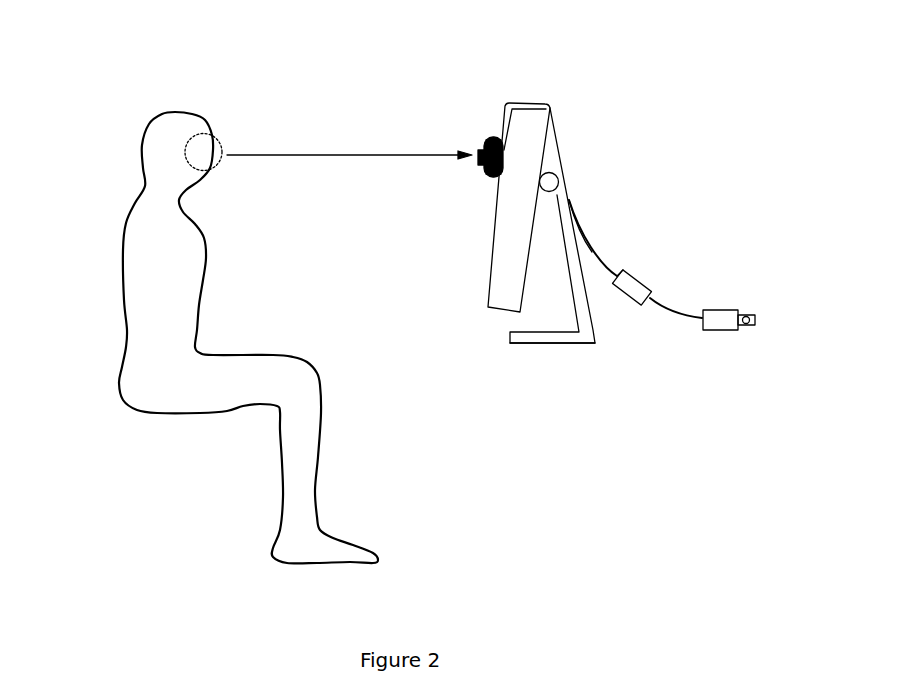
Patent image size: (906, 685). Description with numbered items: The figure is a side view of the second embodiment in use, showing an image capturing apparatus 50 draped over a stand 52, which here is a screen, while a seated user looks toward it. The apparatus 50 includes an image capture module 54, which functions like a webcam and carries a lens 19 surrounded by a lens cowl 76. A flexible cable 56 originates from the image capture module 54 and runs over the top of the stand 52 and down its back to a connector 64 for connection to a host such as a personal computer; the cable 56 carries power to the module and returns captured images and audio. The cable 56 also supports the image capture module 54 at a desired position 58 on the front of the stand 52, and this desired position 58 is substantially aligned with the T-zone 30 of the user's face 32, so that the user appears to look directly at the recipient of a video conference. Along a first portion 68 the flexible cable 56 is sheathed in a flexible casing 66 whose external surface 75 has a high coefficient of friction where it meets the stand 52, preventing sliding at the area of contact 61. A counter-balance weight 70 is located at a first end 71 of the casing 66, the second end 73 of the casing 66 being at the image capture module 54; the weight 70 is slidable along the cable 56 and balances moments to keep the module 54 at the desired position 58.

The lens 19 is at (477, 157).
The T-zone 30 is at (218, 143).
The user's face 32 is at (163, 160).
The image capturing apparatus 50 is at (677, 313).
The stand 52 is at (502, 282).
The image capture module 54 is at (485, 137).
The flexible cable 56 is at (658, 302).
The desired position 58 is at (490, 178).
The area of contact 61 is at (523, 102).
The connector 64 is at (733, 308).
The flexible casing 66 is at (570, 203).
The first portion 68 is at (590, 247).
The counter-balance weight 70 is at (632, 285).
The first end 71 is at (617, 271).
The second end 73 is at (492, 137).
The external surface 75 is at (562, 148).
The lens cowl 76 is at (485, 145).